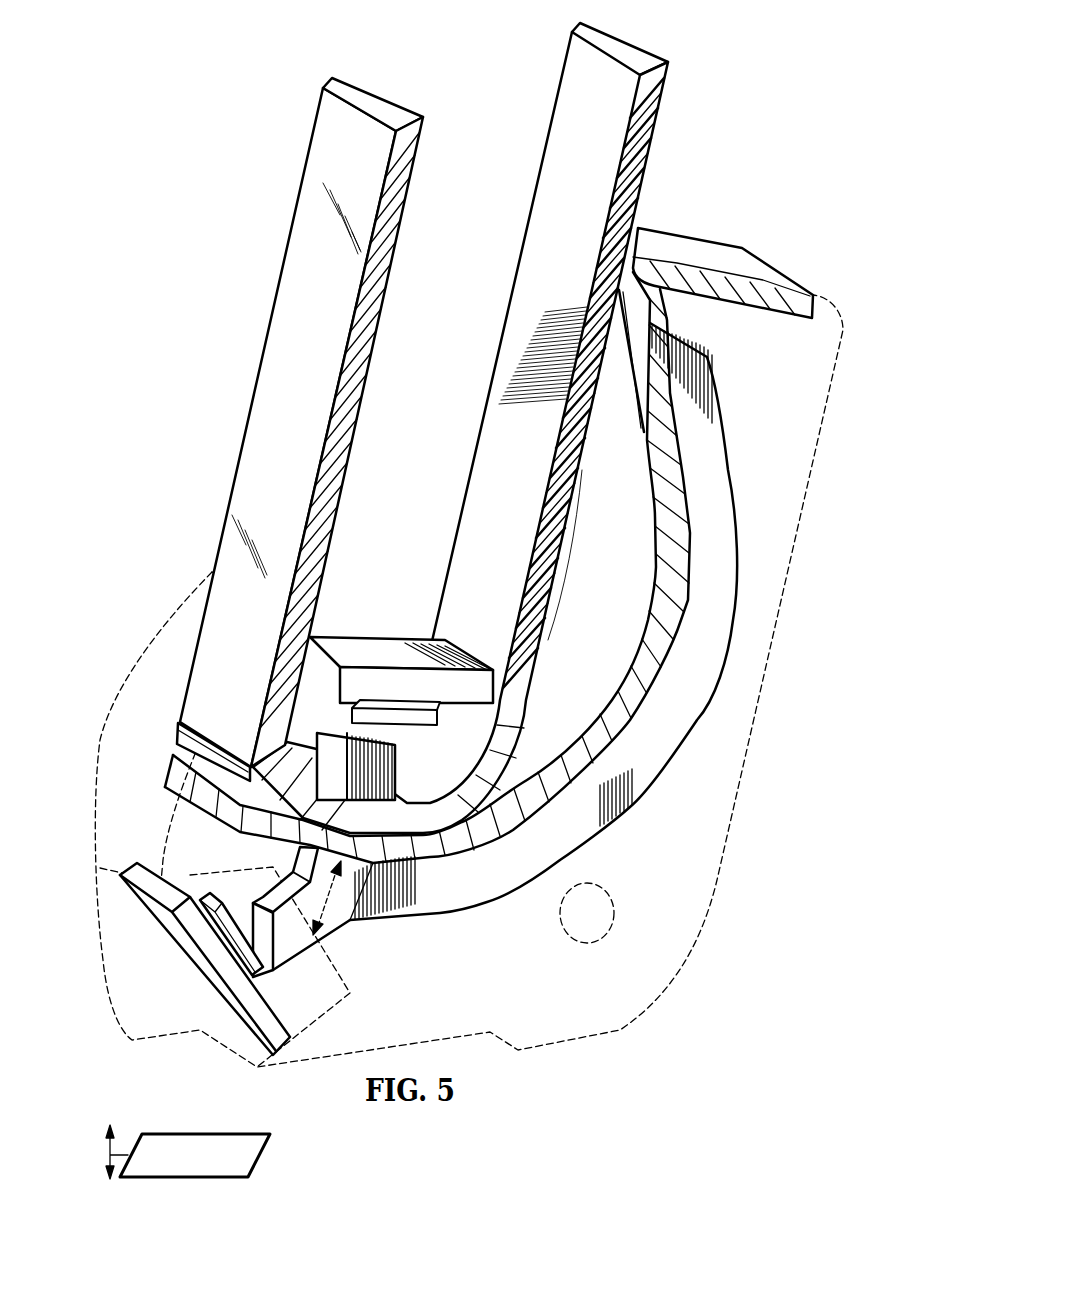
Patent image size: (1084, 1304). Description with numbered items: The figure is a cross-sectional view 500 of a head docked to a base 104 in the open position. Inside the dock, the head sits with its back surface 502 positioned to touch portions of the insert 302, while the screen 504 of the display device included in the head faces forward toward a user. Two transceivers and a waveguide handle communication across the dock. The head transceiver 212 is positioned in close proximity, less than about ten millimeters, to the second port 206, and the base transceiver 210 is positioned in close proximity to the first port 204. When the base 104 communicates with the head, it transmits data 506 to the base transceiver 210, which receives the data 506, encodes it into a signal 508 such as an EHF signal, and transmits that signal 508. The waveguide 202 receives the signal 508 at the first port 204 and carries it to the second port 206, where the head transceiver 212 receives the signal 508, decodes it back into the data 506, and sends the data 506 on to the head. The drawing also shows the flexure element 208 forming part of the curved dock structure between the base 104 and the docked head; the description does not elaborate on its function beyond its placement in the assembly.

The data storage assembly 500 is at (738, 66).
The base 104 is at (577, 1042).
The waveguide 202 is at (487, 915).
The insert 302 is at (626, 723).
The back surface 502 is at (518, 278).
The screen 504 is at (276, 305).
The flexure member 208 is at (640, 427).
The head transceiver 212 is at (380, 645).
The second port 206 is at (303, 863).
The first port 204 is at (263, 935).
The base transceiver 210 is at (210, 987).
The signal 508 is at (320, 882).
The data 506 is at (157, 1178).